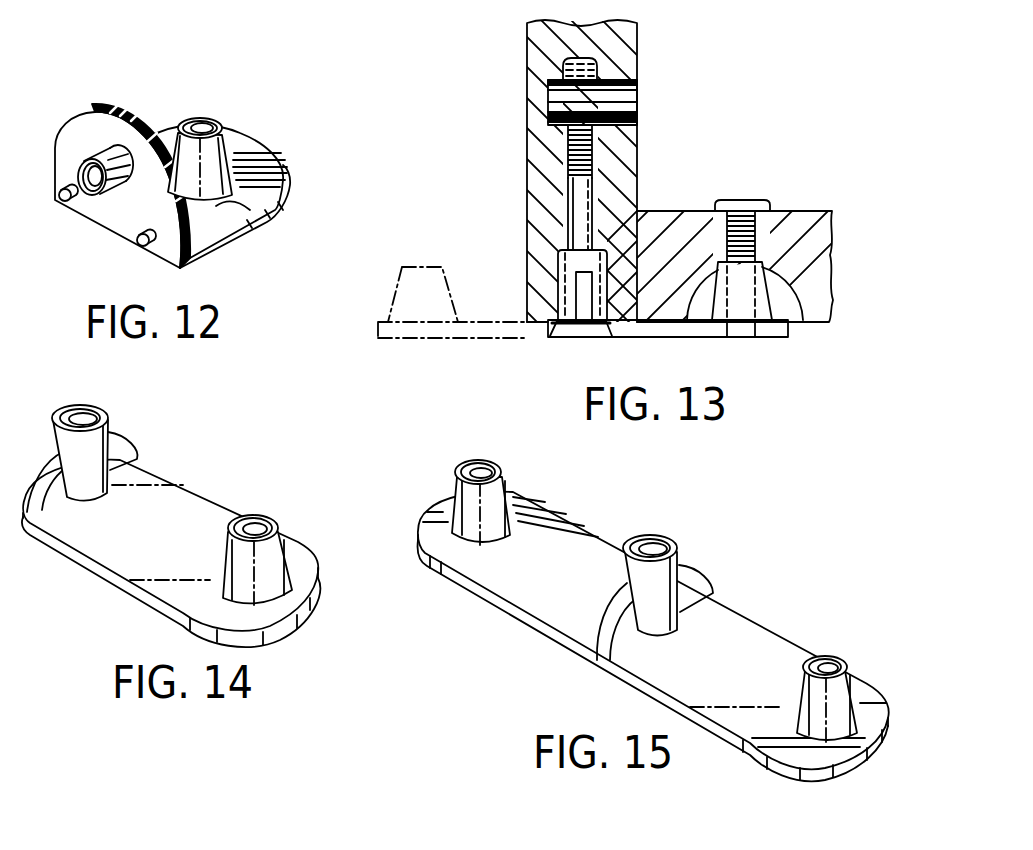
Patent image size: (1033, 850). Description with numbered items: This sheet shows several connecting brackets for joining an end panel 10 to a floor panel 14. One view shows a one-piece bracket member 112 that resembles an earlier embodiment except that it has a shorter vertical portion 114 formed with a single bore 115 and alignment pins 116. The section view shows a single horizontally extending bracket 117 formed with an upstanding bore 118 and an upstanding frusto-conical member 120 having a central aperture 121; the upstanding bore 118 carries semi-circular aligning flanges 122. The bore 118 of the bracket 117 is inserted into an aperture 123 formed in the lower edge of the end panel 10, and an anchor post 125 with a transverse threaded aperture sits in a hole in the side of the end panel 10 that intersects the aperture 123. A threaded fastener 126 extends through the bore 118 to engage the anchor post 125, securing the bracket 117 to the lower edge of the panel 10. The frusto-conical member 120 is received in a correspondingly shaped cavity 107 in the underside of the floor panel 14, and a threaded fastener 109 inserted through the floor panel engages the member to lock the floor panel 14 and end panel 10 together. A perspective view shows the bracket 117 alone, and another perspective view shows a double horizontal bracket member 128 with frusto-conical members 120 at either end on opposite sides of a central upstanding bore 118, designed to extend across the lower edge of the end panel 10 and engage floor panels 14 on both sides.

In FIG. 13, the end panel 10 is at (540, 146).
In FIG. 13, the floor panel 14 is at (800, 220).
In FIG. 13, the cavity 107 is at (685, 323).
In FIG. 13, the threaded fastener 109 is at (730, 203).
In FIG. 12, the one-piece bracket member 112 is at (255, 222).
In FIG. 12, the vertical portion 114 is at (80, 140).
In FIG. 12, the bore 115 is at (105, 198).
In FIG. 12, the alignment pins 116 is at (79, 210).
In FIG. 13, the bracket 117 is at (660, 325).
In FIG. 14, the bracket 117 is at (190, 508).
In FIG. 13, the upstanding bore 118 is at (557, 265).
In FIG. 14, the upstanding bore 118 is at (103, 405).
In FIG. 15, the upstanding bore 118 is at (652, 552).
In FIG. 13, the frusto-conical member 120 is at (806, 323).
In FIG. 14, the frusto-conical member 120 is at (277, 532).
In FIG. 15, the frusto-conical member 120 is at (453, 496).
In FIG. 14, the central aperture 121 is at (258, 520).
In FIG. 15, the central aperture 121 is at (824, 662).
In FIG. 14, the aligning flanges 122 is at (118, 442).
In FIG. 15, the aligning flanges 122 is at (700, 580).
In FIG. 13, the aperture 123 is at (560, 282).
In FIG. 13, the anchor post 125 is at (623, 92).
In FIG. 13, the threaded fastener 126 is at (583, 334).
In FIG. 15, the double horizontal bracket member 128 is at (747, 630).